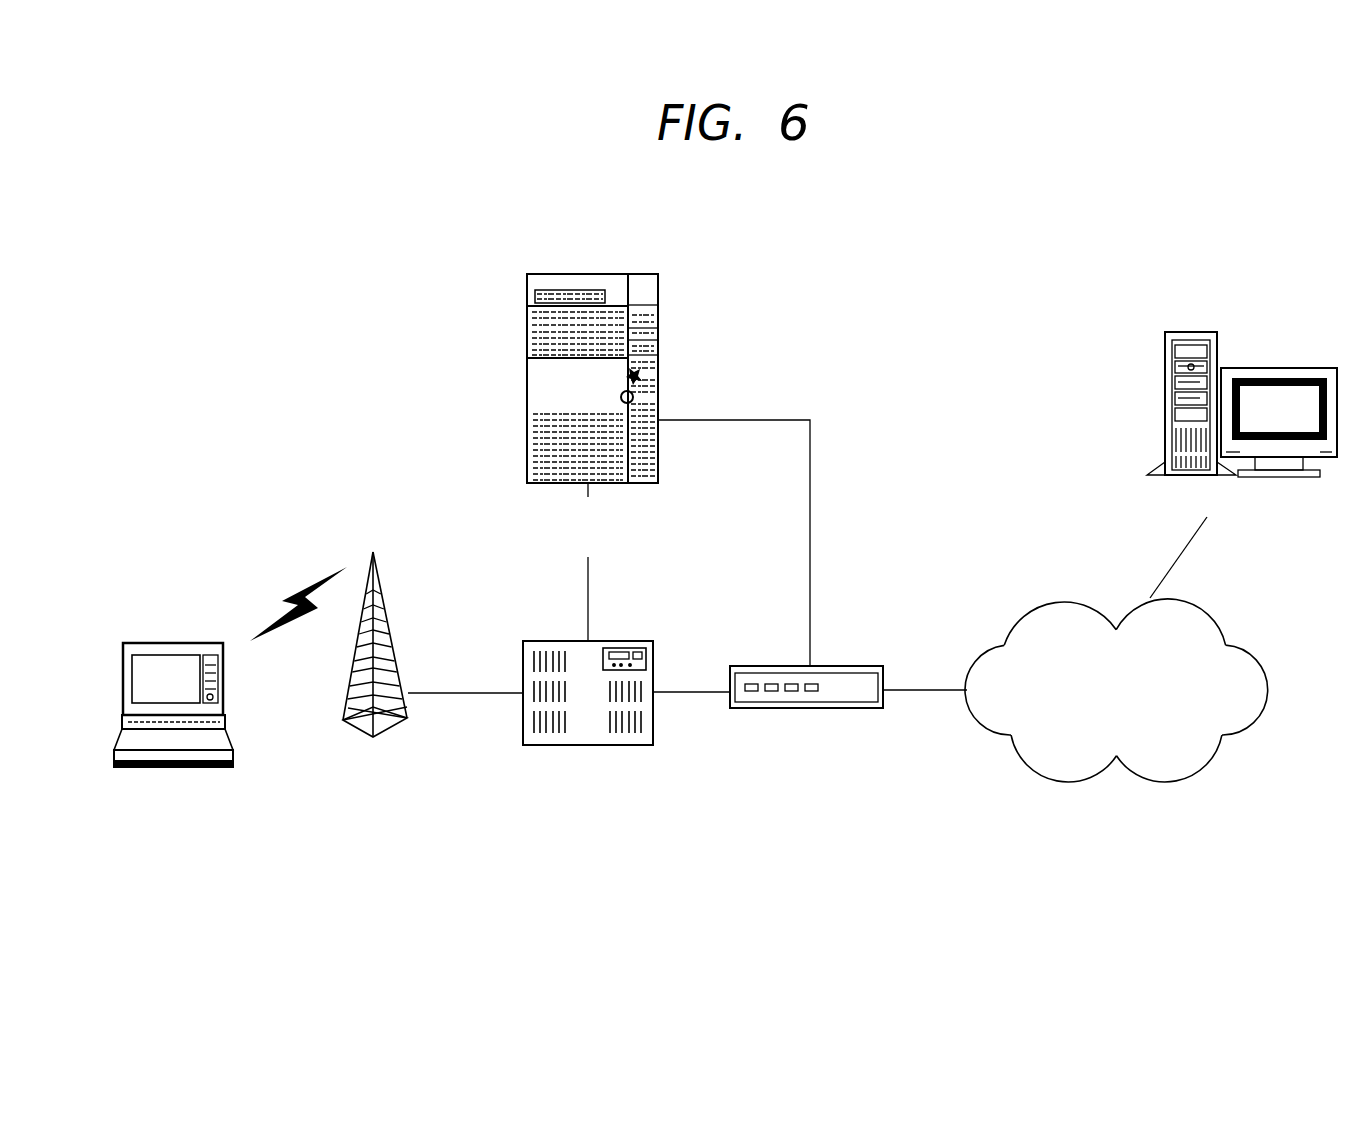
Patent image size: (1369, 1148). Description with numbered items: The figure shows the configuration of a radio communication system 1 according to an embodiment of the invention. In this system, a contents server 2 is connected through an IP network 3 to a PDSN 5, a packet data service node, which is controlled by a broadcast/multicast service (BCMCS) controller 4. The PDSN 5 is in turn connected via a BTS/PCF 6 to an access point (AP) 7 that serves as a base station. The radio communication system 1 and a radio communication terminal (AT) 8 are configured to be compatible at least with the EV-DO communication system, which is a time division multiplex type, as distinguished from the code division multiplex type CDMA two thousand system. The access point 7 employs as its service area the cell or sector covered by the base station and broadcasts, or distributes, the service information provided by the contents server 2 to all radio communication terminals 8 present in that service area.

The radio communication system 1 is at (819, 221).
The contents server 2 is at (1272, 368).
The IP network 3 is at (1267, 690).
The broadcast/multicast service (BCMCS) controller 4 is at (527, 349).
The PDSN 5 is at (852, 666).
The BTS/PCF 6 is at (523, 663).
The access point (AP) 7 is at (351, 725).
The radio communication terminal (AT) 8 is at (172, 642).